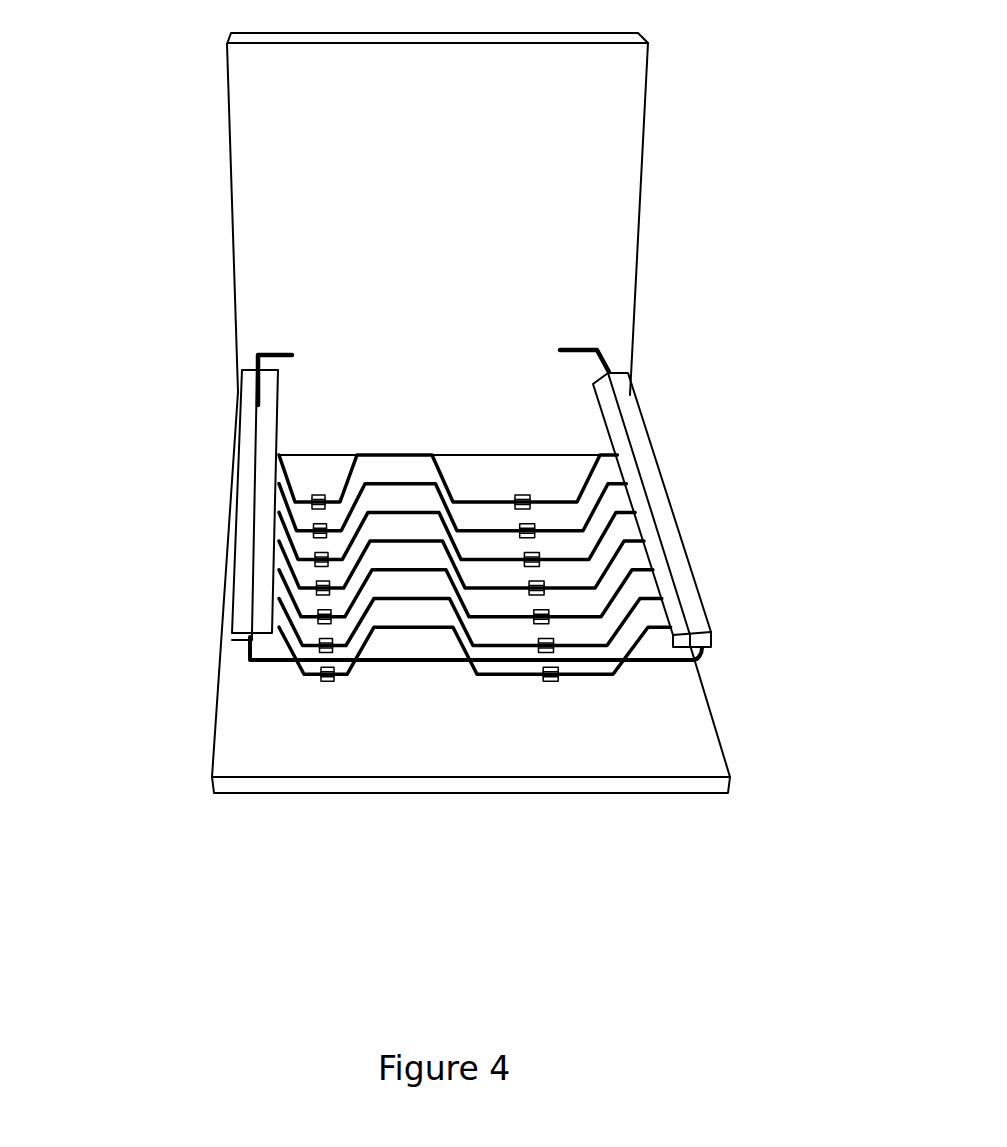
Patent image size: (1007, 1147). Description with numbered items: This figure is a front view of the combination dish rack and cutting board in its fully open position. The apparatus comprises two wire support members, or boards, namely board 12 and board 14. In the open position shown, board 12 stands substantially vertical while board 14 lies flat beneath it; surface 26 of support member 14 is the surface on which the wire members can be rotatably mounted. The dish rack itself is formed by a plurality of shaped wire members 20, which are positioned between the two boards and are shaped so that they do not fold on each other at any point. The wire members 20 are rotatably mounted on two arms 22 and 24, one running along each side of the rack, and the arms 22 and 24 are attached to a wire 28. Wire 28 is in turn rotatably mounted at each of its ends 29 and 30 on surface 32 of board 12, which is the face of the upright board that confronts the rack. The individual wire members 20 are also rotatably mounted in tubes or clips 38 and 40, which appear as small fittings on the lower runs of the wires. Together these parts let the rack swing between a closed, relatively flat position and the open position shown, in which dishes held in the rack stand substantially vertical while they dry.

The wire support member 12 is at (625, 93).
The wire support member 14 is at (700, 745).
The wire members 20 is at (280, 622).
The arm 22 is at (682, 575).
The arm 24 is at (243, 427).
The surface 26 is at (570, 742).
The wire 28 is at (278, 407).
The end of wire 29 is at (578, 348).
The end of wire 30 is at (275, 352).
The surface 32 is at (450, 229).
The clip 38 is at (560, 683).
The clip 40 is at (323, 685).